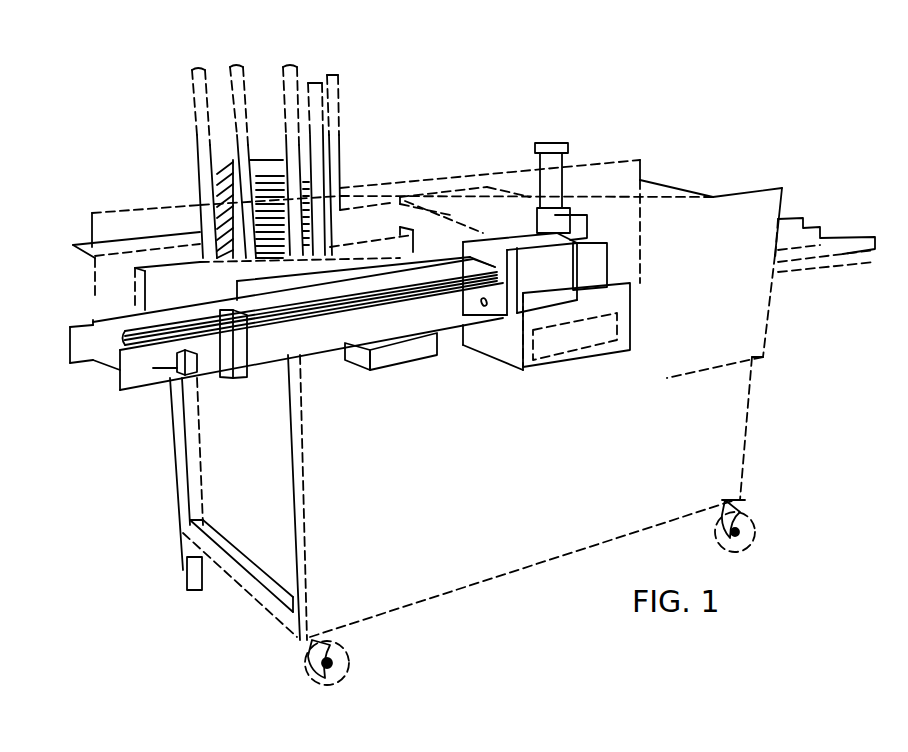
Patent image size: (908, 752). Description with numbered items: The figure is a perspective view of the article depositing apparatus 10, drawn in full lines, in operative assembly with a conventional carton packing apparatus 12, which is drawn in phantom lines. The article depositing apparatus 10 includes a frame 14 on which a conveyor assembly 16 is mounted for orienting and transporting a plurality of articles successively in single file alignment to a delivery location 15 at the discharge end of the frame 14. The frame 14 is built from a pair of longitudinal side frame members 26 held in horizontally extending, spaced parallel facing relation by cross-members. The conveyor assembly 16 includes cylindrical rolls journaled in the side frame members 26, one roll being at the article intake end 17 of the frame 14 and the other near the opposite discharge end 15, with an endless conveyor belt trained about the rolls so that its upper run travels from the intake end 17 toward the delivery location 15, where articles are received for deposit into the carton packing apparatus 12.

The article depositing apparatus 10 is at (432, 309).
The carton packing apparatus 12 is at (640, 343).
The frame 14 is at (336, 333).
The delivery location 15 is at (462, 272).
The conveyor assembly 16 is at (112, 337).
The article intake end 17 is at (136, 325).
The longitudinal side frame members 26 is at (300, 349).